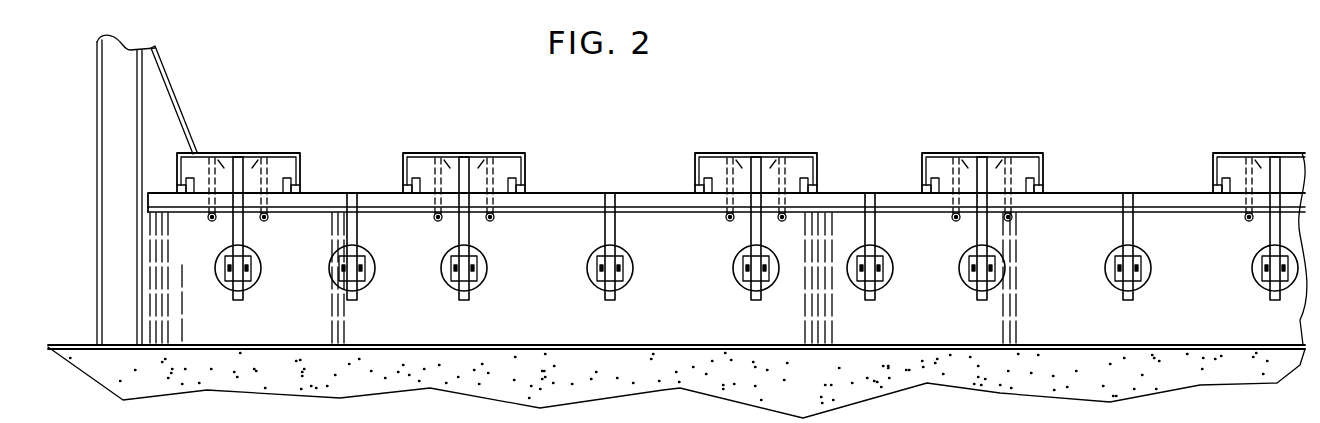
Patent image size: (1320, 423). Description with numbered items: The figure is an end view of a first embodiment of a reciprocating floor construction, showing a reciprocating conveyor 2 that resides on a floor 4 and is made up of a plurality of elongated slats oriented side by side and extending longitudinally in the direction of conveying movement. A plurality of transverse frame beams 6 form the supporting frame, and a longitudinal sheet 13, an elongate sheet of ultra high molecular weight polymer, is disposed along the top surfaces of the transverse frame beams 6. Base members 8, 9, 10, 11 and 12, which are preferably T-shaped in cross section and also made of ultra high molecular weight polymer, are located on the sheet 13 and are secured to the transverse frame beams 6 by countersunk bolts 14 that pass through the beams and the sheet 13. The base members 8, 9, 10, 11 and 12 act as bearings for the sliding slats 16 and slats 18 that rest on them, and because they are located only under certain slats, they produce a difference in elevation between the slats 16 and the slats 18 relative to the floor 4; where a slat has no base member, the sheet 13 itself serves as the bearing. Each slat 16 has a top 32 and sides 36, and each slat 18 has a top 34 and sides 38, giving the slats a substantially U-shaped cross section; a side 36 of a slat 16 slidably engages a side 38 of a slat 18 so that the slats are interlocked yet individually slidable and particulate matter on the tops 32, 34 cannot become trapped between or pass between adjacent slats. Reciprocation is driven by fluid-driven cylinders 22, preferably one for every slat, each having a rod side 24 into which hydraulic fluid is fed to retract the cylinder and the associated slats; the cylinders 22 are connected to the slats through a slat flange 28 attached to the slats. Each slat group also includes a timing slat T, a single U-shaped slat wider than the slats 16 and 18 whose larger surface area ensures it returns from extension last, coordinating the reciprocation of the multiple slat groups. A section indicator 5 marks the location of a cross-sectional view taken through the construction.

The reciprocating conveyor 2 is at (668, 81).
The floor 4 is at (78, 346).
The section line 5 is at (1013, 37).
The transverse frame beams 6 is at (1209, 250).
The base member 8 is at (286, 162).
The base member 9 is at (512, 162).
The base member 10 is at (805, 162).
The base member 11 is at (1030, 162).
The base member 12 is at (1225, 160).
The longitudinal sheet 13 is at (168, 80).
The countersunk bolts 14 is at (229, 150).
The slat 16 is at (368, 192).
The slat 18 is at (152, 195).
The fluid-driven cylinder 22 is at (220, 253).
The rod side 24 is at (225, 280).
The slat flange 28 is at (345, 300).
The top 32 is at (348, 192).
The top 34 is at (427, 153).
The sides 36 is at (283, 187).
The sides 38 is at (300, 178).
The timing slat T is at (638, 190).